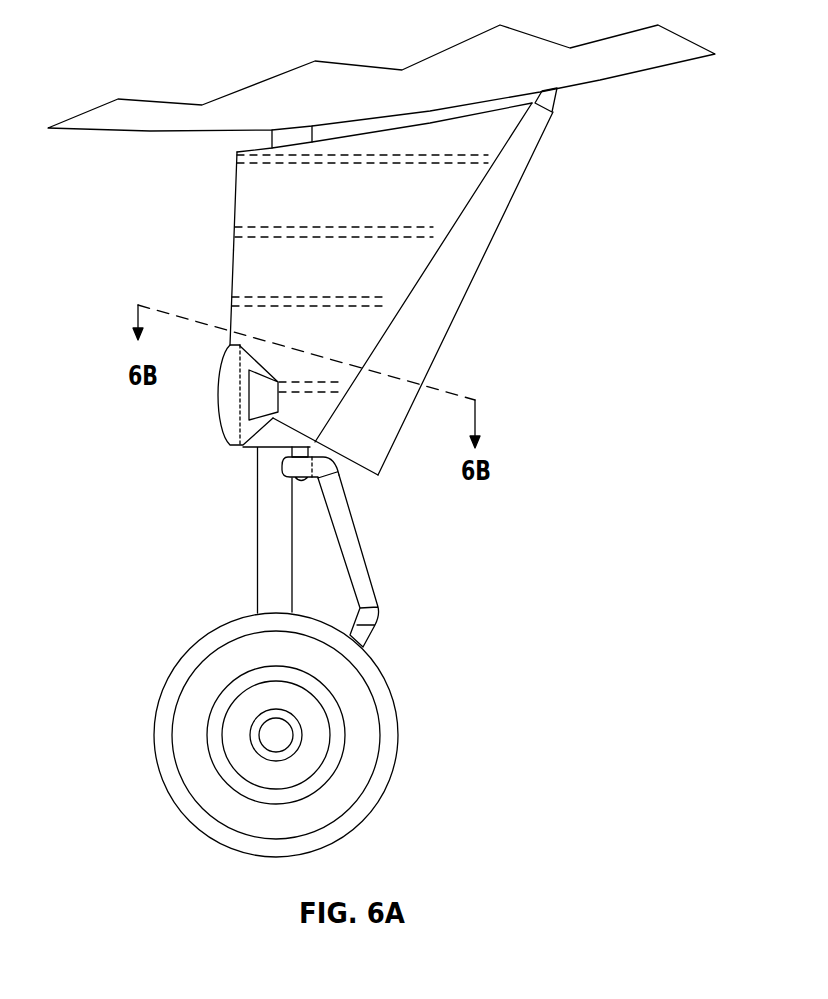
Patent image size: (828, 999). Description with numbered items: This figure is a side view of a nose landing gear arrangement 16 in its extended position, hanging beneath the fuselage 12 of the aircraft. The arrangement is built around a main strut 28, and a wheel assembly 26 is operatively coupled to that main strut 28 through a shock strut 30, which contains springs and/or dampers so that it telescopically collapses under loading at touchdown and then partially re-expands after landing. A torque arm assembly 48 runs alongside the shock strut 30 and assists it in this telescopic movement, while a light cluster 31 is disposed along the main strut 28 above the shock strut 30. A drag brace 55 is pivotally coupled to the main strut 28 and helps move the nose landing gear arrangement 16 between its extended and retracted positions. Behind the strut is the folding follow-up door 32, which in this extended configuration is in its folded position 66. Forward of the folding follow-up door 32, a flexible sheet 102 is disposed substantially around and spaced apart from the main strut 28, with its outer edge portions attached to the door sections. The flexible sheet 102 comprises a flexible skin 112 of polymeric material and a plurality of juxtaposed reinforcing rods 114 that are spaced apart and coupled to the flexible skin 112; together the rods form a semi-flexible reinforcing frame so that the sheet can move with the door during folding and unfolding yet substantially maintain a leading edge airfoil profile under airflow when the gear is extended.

The fuselage 12 is at (145, 134).
The nose landing gear arrangement 16 is at (557, 357).
The wheel assembly 26 is at (162, 721).
The main strut 28 is at (330, 125).
The shock strut 30 is at (258, 554).
The light cluster 31 is at (219, 395).
The folding follow-up door 32 is at (420, 289).
The torque arm assembly 48 is at (359, 546).
The drag brace 55 is at (558, 96).
The folded position 66 is at (496, 232).
The flexible sheet 102 is at (257, 205).
The flexible skin 112 is at (241, 268).
The juxtaposed reinforcing rods 114 is at (361, 162).